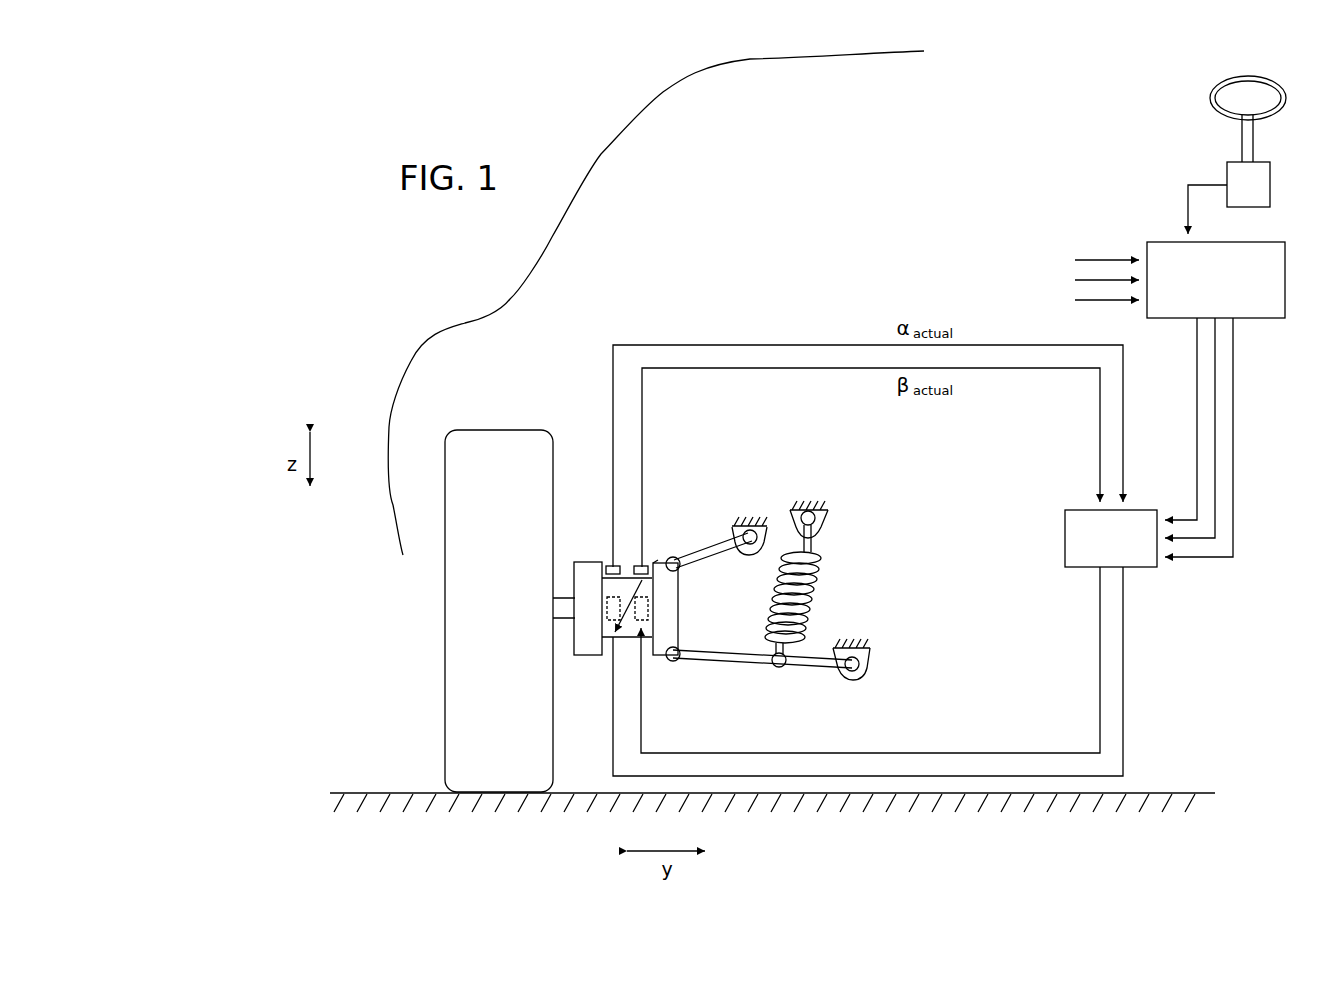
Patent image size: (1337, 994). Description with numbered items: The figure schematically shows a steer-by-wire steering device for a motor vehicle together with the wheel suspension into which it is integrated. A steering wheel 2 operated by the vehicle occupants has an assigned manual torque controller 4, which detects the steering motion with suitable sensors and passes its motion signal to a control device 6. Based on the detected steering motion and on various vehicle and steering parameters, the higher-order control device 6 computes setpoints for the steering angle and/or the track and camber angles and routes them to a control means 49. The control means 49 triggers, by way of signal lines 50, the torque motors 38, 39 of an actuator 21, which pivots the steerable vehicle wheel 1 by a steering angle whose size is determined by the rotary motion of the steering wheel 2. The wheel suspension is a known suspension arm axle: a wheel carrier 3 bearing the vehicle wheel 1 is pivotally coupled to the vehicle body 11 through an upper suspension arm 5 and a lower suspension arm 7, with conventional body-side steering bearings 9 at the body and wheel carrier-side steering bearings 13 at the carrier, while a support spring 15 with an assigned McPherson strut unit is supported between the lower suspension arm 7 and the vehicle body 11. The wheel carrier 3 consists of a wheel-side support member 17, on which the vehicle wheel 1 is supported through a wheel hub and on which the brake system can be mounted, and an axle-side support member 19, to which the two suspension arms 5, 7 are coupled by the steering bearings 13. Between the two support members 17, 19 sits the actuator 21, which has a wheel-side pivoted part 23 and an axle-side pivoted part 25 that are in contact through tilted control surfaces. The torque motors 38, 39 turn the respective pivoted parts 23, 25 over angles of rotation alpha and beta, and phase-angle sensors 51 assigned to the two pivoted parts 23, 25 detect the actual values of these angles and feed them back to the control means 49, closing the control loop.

The steerable vehicle wheel 1 is at (490, 549).
The steering wheel 2 is at (1274, 80).
The wheel carrier 3 is at (574, 554).
The manual torque controller 4 is at (1240, 198).
The upper suspension arm 5 is at (710, 553).
The control device 6 is at (1207, 290).
The lower suspension arm 7 is at (806, 666).
The body-side steering bearings 9 is at (756, 555).
The vehicle body 11 is at (790, 508).
The wheel carrier-side steering bearings 13 is at (678, 559).
The support spring 15 is at (815, 600).
The wheel-side support member 17 is at (587, 656).
The axle-side support member 19 is at (672, 600).
The actuator 21 is at (624, 556).
The wheel-side pivoted part 23 is at (608, 580).
The axle-side pivoted part 25 is at (655, 575).
The torque motor 38 is at (607, 617).
The torque motor 39 is at (648, 621).
The control means 49 is at (1097, 549).
The signal lines 50 is at (1097, 682).
The phase-angle sensors 51 is at (615, 566).